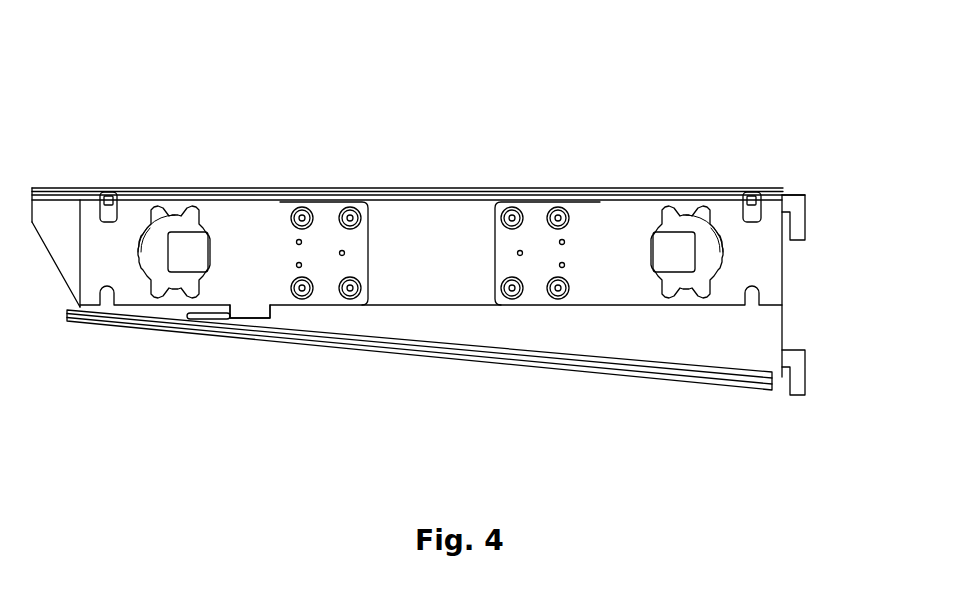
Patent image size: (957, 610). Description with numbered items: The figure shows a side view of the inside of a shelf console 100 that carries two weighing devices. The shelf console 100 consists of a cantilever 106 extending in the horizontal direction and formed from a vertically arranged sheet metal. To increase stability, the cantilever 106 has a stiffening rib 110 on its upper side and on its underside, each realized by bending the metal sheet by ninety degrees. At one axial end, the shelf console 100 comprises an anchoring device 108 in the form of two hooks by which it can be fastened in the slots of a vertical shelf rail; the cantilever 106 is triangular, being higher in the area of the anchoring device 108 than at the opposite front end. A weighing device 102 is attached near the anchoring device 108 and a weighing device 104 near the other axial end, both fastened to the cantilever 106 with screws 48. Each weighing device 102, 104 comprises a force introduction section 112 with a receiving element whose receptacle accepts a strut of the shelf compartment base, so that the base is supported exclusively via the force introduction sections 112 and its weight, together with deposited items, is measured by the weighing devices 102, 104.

The shelf console 100 is at (488, 73).
The weighing device 102 is at (613, 326).
The weighing device 104 is at (287, 326).
The cantilever 106 is at (421, 323).
The anchoring device 108 is at (823, 172).
The stiffening rib 110 is at (441, 191).
The force introduction section 112 is at (111, 175).
The screws 48 is at (302, 207).